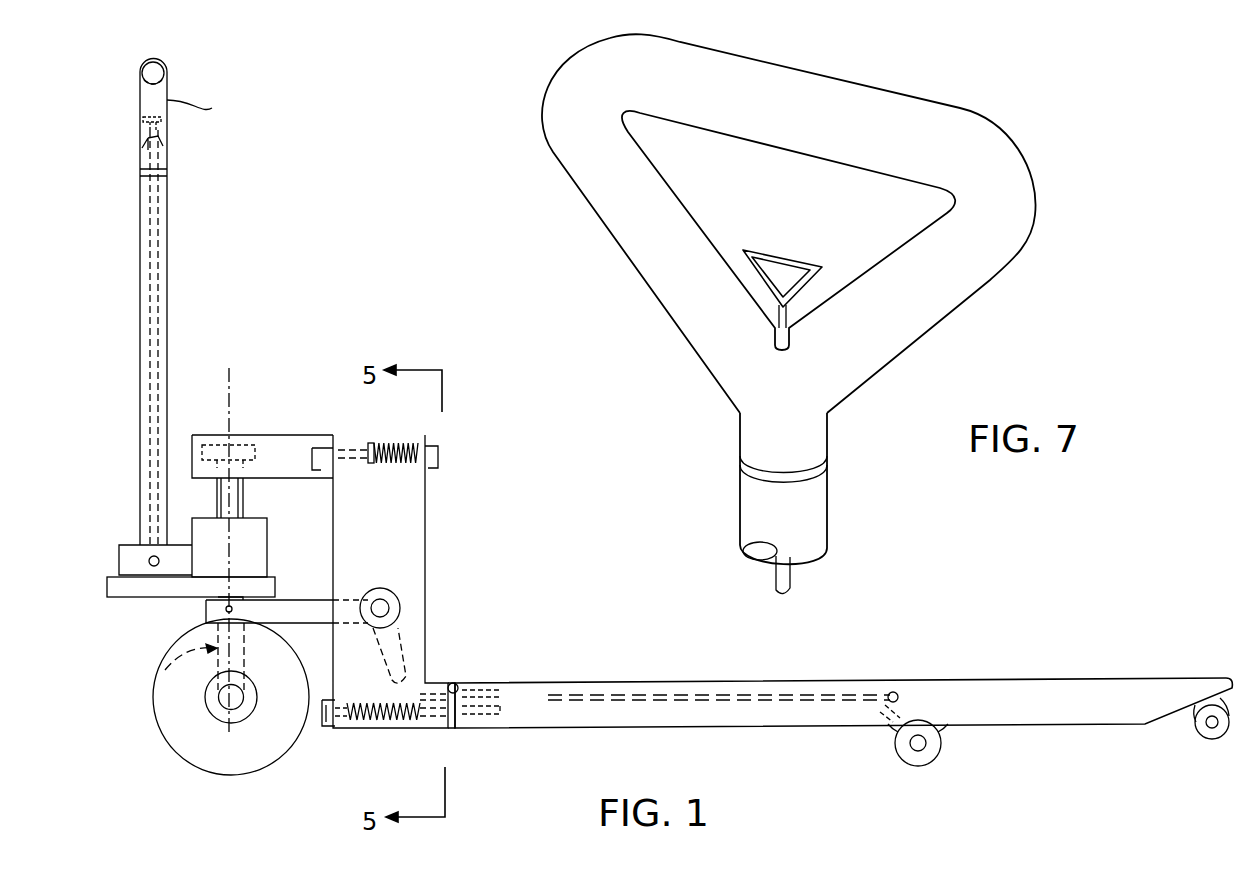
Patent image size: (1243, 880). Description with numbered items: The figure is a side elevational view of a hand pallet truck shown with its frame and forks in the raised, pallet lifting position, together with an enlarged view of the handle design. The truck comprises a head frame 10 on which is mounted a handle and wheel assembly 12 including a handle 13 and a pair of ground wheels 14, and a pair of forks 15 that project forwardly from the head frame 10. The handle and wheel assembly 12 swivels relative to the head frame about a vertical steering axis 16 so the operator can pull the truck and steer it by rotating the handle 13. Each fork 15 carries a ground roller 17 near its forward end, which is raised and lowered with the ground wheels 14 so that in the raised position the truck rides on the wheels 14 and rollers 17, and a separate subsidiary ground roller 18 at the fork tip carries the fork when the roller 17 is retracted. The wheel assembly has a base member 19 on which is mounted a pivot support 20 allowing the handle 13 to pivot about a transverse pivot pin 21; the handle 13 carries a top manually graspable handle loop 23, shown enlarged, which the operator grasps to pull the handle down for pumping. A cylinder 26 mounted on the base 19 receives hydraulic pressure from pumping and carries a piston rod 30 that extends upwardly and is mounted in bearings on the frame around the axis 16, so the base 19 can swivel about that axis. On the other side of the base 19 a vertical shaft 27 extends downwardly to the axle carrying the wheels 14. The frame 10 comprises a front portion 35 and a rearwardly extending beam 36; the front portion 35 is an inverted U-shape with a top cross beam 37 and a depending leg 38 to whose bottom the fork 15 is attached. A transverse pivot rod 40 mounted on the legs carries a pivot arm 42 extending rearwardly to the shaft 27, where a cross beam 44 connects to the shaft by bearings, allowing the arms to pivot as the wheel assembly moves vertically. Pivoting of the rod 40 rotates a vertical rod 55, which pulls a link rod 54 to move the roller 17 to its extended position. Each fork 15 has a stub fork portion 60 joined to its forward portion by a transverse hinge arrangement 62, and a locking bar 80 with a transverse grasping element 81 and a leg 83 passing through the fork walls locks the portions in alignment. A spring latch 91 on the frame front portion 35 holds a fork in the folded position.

In FIG. 1, the head frame 10 is at (436, 538).
In FIG. 1, the handle and wheel assembly 12 is at (128, 692).
In FIG. 1, the handle 13 is at (180, 236).
In FIG. 7, the handle 13 is at (700, 422).
In FIG. 1, the ground wheels 14 is at (182, 728).
In FIG. 1, the forks 15 is at (1072, 668).
In FIG. 1, the vertical steering axis 16 is at (232, 405).
In FIG. 1, the ground rollers 17 is at (944, 744).
In FIG. 1, the subsidiary ground roller 18 is at (1197, 735).
In FIG. 1, the base member 19 is at (108, 592).
In FIG. 1, the pivot support 20 is at (120, 544).
In FIG. 1, the transverse pivot pin 21 is at (150, 561).
In FIG. 1, the handle loop 23 is at (214, 107).
In FIG. 7, the handle loop 23 is at (622, 214).
In FIG. 1, the cylinder 26 is at (255, 552).
In FIG. 1, the vertical shaft 27 is at (166, 668).
In FIG. 1, the piston rod 30 is at (252, 500).
In FIG. 1, the front portion 35 is at (428, 438).
In FIG. 1, the rearwardly extending beam 36 is at (280, 435).
In FIG. 1, the top cross beam 37 is at (400, 434).
In FIG. 1, the depending leg 38 is at (407, 549).
In FIG. 1, the transverse pivot rod 40 is at (396, 608).
In FIG. 1, the pivot arm 42 is at (306, 608).
In FIG. 1, the cross beam 44 is at (210, 612).
In FIG. 1, the link rod 54 is at (690, 696).
In FIG. 1, the vertical rod 55 is at (404, 652).
In FIG. 1, the stub fork portion 60 is at (440, 732).
In FIG. 1, the transverse hinge arrangement 62 is at (456, 676).
In FIG. 1, the locking bar 80 is at (366, 726).
In FIG. 1, the transverse grasping element 81 is at (325, 700).
In FIG. 1, the leg of locking bar 83 is at (474, 732).
In FIG. 1, the spring latch 91 is at (440, 455).